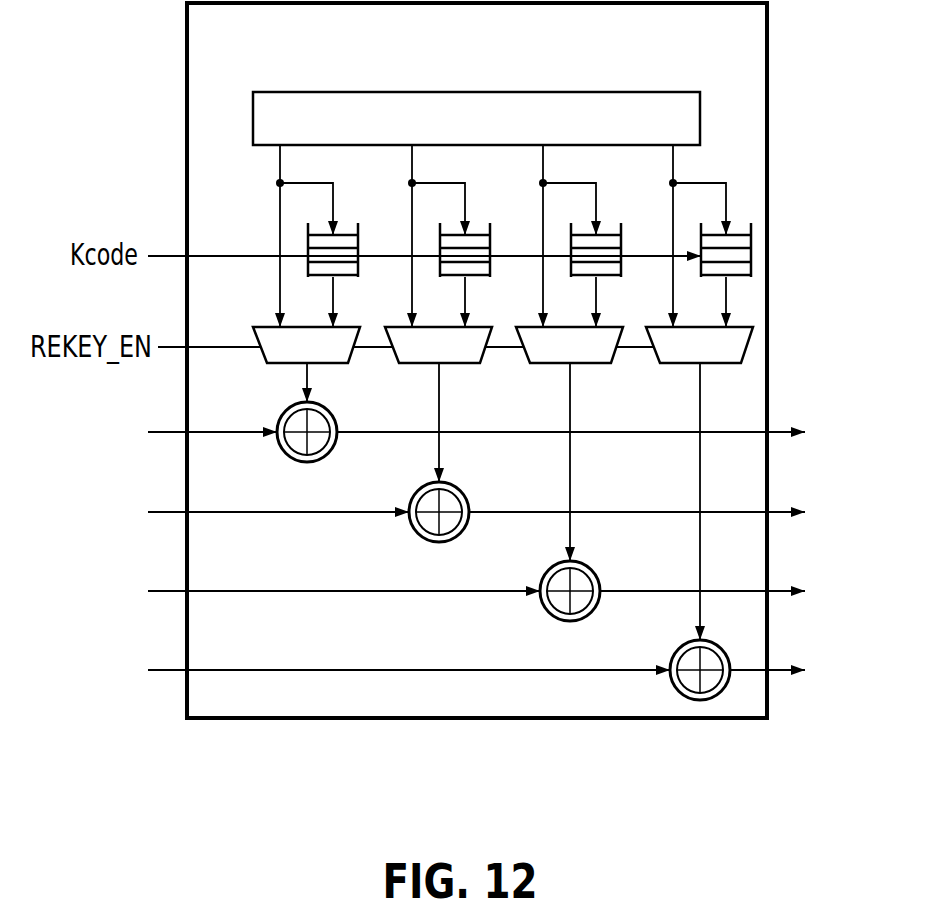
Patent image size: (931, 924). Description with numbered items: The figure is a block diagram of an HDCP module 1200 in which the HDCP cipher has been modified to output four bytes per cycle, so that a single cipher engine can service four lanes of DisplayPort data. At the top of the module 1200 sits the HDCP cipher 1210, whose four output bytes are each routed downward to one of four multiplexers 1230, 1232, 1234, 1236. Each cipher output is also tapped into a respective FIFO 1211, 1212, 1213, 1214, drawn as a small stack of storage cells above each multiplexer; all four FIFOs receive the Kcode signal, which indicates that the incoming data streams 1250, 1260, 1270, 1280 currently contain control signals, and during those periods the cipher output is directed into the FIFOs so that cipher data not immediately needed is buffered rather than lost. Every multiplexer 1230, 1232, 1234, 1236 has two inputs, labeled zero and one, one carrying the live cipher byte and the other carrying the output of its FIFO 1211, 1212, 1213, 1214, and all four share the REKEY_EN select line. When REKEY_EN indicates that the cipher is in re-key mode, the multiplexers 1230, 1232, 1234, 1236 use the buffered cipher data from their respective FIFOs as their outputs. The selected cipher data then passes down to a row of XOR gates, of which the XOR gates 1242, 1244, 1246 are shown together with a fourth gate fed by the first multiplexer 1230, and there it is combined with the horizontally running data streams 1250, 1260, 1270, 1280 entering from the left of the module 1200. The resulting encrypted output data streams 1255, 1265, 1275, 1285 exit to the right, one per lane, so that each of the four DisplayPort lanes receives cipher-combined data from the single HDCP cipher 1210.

The HDCP module 1200 is at (447, 45).
The HDCP cipher 1210 is at (628, 92).
The FIFO 1211 is at (348, 234).
The FIFO 1212 is at (478, 234).
The third key register 1213 is at (609, 234).
The FIFO 1214 is at (738, 234).
The multiplexer 1230 is at (346, 328).
The multiplexer 1232 is at (479, 328).
The multiplexer 1234 is at (610, 328).
The multiplexer 1236 is at (686, 364).
The XOR gate 1242 is at (460, 491).
The XOR gate 1244 is at (591, 570).
The XOR gate 1246 is at (679, 649).
The data stream 1250 is at (163, 432).
The data stream 1260 is at (163, 512).
The data stream 1270 is at (163, 591).
The data stream 1280 is at (163, 670).
The output data stream 1255 is at (783, 432).
The output data stream 1265 is at (783, 512).
The output data stream 1275 is at (783, 591).
The fourth output signal 1285 is at (783, 670).